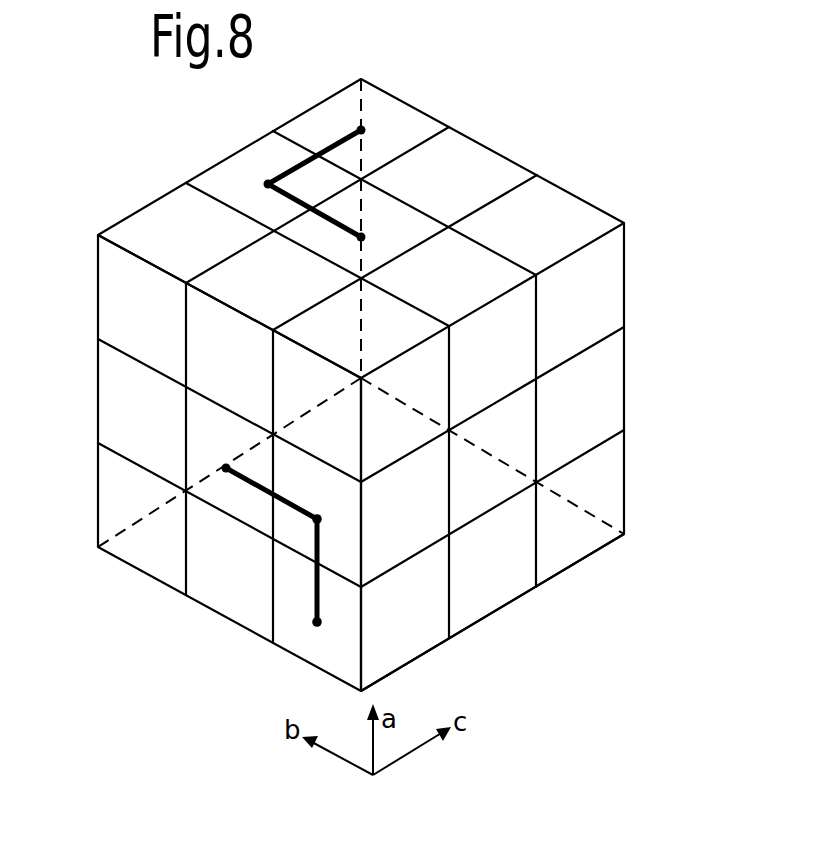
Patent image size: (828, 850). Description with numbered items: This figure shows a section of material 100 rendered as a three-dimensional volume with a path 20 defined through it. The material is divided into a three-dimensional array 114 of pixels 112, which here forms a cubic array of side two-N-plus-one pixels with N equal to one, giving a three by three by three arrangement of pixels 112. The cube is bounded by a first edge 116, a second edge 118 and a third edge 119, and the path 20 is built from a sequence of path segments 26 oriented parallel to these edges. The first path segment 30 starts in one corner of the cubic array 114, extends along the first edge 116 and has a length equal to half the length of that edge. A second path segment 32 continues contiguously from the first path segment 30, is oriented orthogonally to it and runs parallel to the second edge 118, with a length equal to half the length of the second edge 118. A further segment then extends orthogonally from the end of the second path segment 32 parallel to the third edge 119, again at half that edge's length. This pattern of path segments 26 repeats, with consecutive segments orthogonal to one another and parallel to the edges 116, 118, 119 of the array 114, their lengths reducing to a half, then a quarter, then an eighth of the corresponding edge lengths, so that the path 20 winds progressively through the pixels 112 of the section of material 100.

The section of material 100 is at (472, 123).
The pixels 112 is at (613, 470).
The three-dimensional array 114 is at (583, 563).
The first edge 116 is at (367, 652).
The second edge 118 is at (133, 256).
The third edge 119 is at (253, 143).
The path 20 is at (315, 603).
The path segments 26 is at (313, 575).
The first path segment 30 is at (318, 537).
The second path segment 32 is at (257, 488).